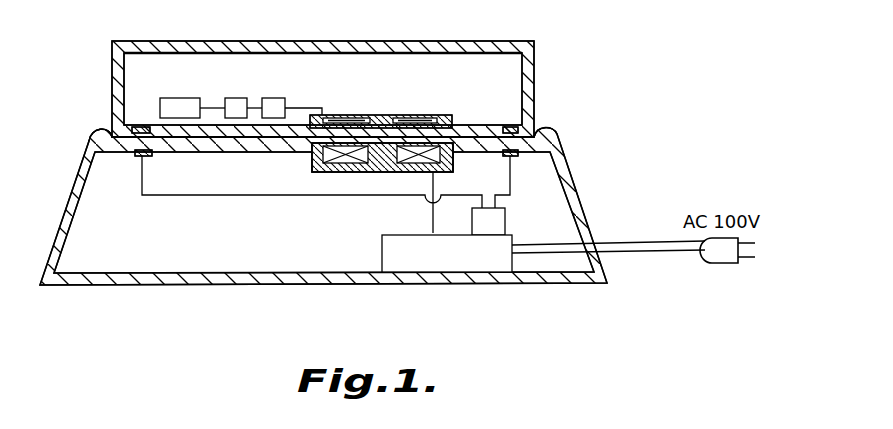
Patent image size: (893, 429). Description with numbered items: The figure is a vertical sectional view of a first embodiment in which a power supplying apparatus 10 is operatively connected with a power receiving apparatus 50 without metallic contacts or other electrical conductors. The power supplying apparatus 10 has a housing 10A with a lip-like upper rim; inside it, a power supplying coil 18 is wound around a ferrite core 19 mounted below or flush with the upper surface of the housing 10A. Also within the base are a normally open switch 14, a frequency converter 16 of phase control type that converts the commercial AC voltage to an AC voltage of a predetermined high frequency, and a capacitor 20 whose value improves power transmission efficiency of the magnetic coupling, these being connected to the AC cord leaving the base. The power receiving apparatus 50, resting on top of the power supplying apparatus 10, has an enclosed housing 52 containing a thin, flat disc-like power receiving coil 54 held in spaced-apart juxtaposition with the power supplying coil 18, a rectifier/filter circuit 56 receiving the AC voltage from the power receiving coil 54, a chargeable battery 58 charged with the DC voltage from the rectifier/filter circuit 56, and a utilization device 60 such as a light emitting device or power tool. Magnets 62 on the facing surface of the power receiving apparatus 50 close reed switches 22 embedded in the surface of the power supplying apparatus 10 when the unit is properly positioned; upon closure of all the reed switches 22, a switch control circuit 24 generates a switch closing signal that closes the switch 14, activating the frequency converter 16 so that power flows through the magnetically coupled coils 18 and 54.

The power supplying apparatus 10 is at (350, 203).
The housing of the power supplying apparatus 10A is at (560, 136).
The normally open switch 14 is at (406, 253).
The frequency converter 16 is at (406, 253).
The capacitor 20 is at (388, 254).
The power supplying coil 18 is at (349, 168).
The ferrite core 19 is at (384, 172).
The reed switches 22 is at (140, 155).
The switch control circuit 24 is at (498, 219).
The power receiving apparatus 50 is at (366, 70).
The housing 52 is at (463, 43).
The power receiving coil 54 is at (379, 115).
The rectifier/filter circuit 56 is at (275, 98).
The chargeable battery 58 is at (235, 98).
The utilization device 60 is at (181, 98).
The magnets 62 is at (140, 125).